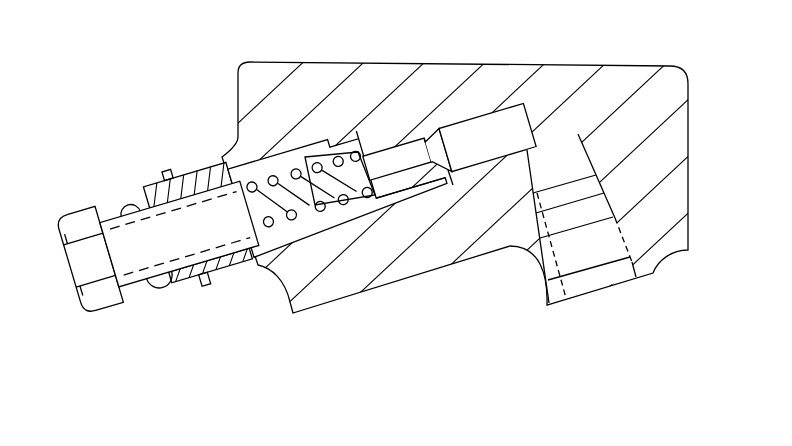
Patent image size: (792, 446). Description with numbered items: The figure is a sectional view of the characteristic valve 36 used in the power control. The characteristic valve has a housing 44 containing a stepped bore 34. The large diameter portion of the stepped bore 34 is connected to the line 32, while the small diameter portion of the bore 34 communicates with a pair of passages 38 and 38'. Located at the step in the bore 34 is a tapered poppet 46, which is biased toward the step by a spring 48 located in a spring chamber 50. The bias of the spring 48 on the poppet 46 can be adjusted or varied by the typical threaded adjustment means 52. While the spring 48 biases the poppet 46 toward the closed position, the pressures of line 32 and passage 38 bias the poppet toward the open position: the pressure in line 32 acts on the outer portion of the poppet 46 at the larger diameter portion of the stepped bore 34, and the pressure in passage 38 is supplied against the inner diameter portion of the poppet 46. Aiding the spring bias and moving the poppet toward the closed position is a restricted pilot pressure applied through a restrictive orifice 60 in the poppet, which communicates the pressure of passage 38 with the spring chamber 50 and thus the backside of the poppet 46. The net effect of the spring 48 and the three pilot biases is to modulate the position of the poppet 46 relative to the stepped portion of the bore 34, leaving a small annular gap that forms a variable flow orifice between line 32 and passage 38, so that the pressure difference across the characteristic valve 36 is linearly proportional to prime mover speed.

The line 32 is at (397, 125).
The stepped bore 34 is at (499, 145).
The characteristic valve 36 is at (244, 307).
The passage 38 is at (581, 218).
The passage 38' is at (546, 116).
The housing 44 is at (678, 124).
The tapered poppet 46 is at (423, 136).
The spring 48 is at (297, 168).
The spring chamber 50 is at (296, 204).
The threaded adjustment means 52 is at (150, 230).
The restrictive orifice 60 is at (448, 170).